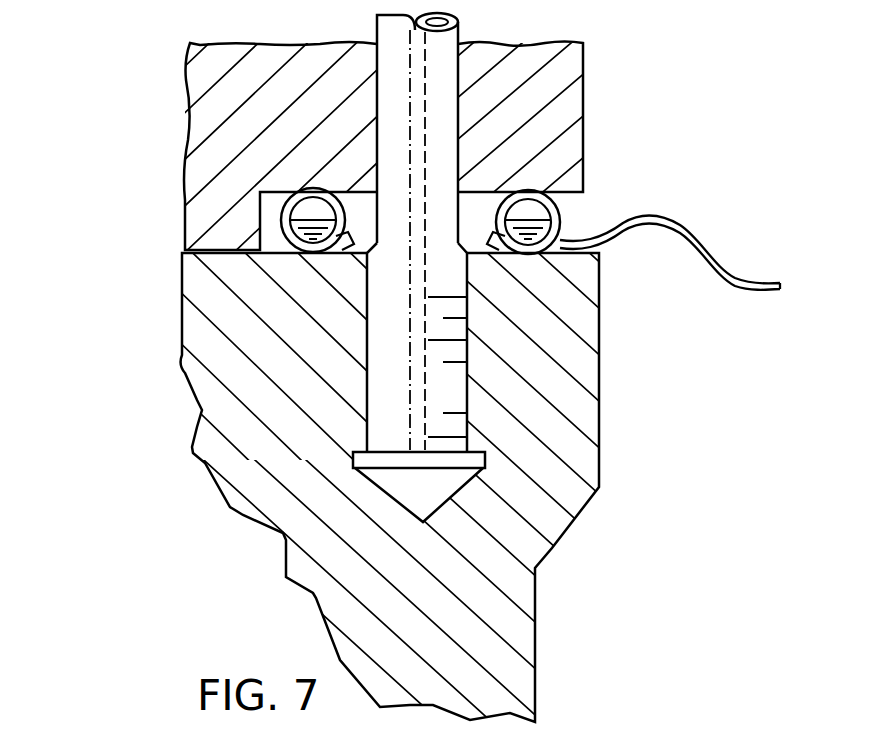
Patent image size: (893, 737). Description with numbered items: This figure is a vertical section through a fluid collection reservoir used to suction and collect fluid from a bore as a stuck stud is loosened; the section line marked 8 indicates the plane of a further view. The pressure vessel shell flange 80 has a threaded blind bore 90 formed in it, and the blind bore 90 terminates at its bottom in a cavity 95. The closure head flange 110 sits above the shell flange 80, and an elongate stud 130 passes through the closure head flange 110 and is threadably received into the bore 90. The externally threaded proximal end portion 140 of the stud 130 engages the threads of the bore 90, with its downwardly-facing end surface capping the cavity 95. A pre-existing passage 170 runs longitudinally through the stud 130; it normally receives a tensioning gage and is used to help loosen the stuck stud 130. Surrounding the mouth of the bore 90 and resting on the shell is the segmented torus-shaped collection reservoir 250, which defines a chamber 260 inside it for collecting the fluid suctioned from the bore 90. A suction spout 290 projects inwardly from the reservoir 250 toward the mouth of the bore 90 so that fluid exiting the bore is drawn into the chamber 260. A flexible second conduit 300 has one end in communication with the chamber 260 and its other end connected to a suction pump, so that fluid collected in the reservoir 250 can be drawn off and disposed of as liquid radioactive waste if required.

The closure head flange 110 is at (553, 80).
The elongate stud 130 is at (432, 108).
The passage 170 is at (430, 108).
The collection reservoir 250 is at (545, 201).
The chamber 260 is at (552, 222).
The suction spout 290 is at (342, 252).
The threaded blind bore 90 is at (467, 266).
The proximal end portion 140 is at (432, 393).
The pressure vessel shell flange 80 is at (570, 460).
The cavity 95 is at (447, 501).
The flexible second conduit 300 is at (717, 280).
The section line 8- 8 is at (795, 223).